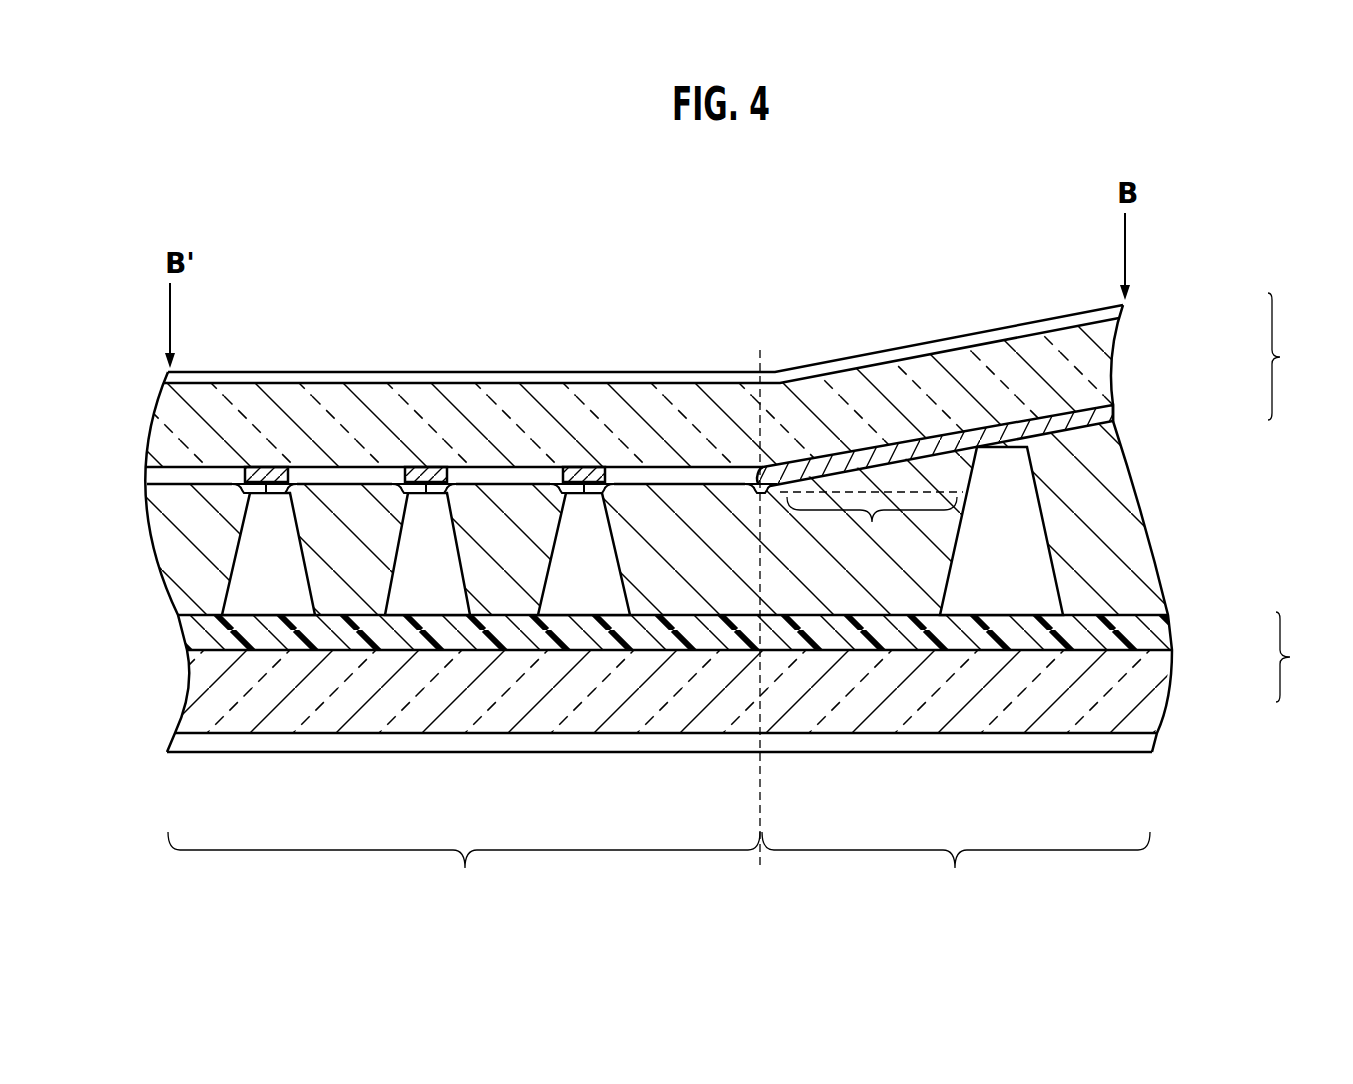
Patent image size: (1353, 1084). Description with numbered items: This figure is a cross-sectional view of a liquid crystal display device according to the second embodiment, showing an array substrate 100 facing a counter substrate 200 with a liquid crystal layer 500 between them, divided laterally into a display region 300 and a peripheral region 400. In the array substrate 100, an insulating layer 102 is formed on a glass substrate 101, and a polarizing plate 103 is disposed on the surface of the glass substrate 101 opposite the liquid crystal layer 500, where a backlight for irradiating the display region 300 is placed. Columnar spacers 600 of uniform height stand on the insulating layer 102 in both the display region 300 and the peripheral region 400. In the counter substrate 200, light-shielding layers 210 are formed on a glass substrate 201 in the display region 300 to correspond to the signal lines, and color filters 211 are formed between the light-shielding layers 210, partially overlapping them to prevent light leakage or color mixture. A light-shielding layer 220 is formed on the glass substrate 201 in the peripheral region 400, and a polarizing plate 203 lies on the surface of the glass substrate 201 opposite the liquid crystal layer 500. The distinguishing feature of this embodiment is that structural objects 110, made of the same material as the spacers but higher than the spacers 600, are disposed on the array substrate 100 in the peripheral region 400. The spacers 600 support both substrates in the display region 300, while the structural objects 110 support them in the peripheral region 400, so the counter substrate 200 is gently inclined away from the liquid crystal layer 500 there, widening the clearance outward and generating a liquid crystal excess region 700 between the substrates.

The array substrate 100 is at (1304, 657).
The glass substrate 101 is at (1145, 695).
The insulating layer 102 is at (1162, 625).
The polarizing plate 103 is at (1145, 742).
The structural objects 110 is at (1047, 585).
The counter substrate 200 is at (1299, 356).
The glass substrate 201 is at (1110, 360).
The polarizing plate 203 is at (1125, 306).
The light-shielding layers 210 is at (273, 462).
The color filters 211 is at (212, 475).
The light-shielding layer 220 is at (1112, 408).
The display region 300 is at (464, 869).
The peripheral region 400 is at (956, 869).
The liquid crystal layer 500 is at (1130, 507).
The columnar spacers 600 is at (258, 590).
The liquid crystal excess region 700 is at (871, 530).